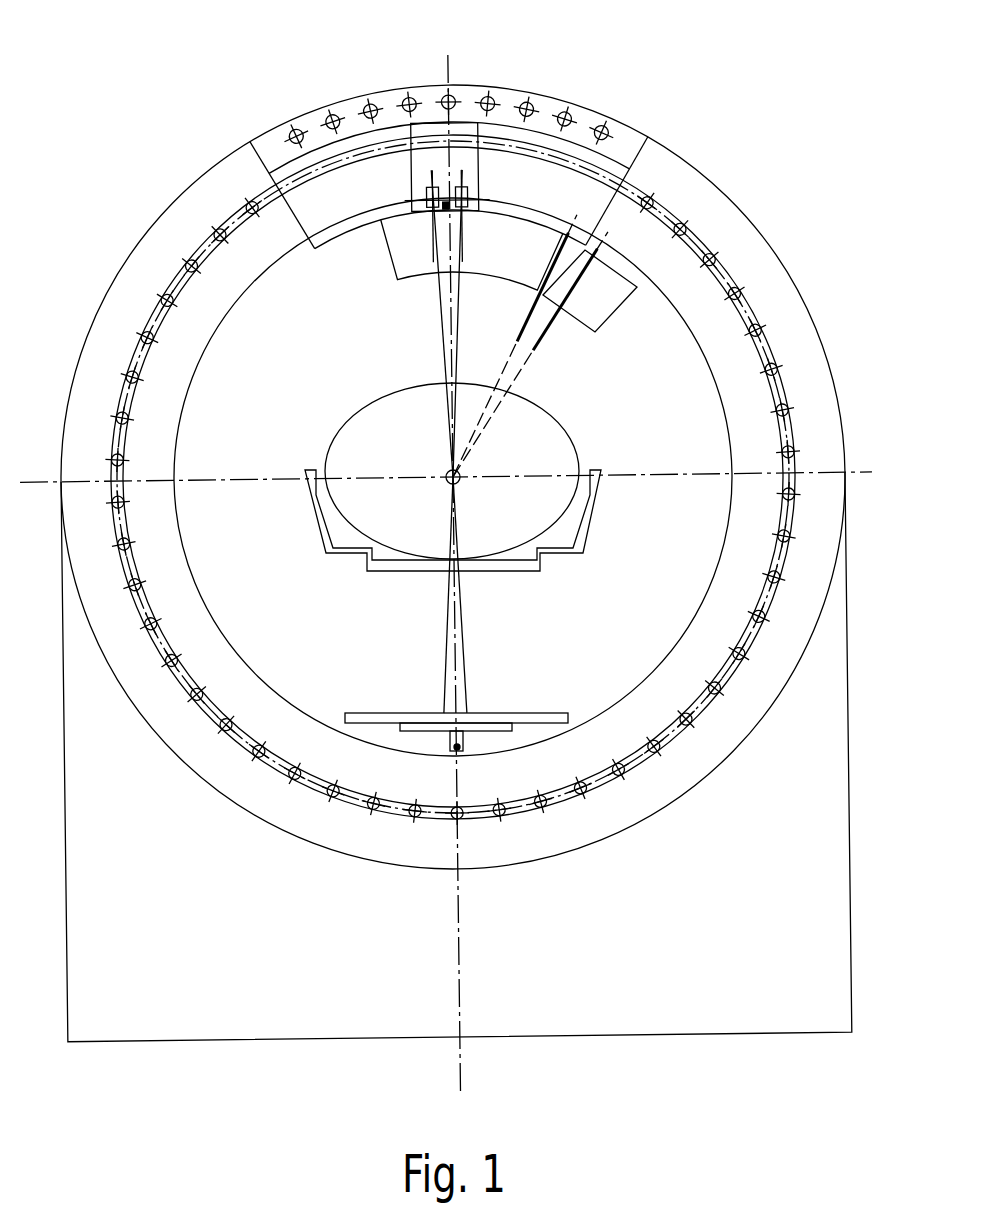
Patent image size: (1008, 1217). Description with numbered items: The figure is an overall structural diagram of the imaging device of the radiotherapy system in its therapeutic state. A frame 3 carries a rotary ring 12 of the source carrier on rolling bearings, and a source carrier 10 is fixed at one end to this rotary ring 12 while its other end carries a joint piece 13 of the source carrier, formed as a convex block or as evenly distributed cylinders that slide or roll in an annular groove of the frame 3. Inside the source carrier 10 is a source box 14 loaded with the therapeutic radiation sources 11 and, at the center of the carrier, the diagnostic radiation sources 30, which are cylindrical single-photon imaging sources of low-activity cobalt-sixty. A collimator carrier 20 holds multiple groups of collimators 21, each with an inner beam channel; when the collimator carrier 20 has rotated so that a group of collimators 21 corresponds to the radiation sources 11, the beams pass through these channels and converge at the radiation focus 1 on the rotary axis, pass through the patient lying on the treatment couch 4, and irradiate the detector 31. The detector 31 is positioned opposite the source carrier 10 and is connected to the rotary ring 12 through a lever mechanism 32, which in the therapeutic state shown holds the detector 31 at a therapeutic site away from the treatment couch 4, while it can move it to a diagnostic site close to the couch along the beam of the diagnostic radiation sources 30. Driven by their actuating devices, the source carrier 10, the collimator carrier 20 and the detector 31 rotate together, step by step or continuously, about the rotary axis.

The radiation focus 1 is at (459, 472).
The frame 3 is at (795, 347).
The treatment couch 4 is at (590, 527).
The source carrier 10 is at (499, 170).
The therapeutic radiation sources 11 is at (432, 190).
The rotary ring of source carrier 12 is at (738, 291).
The joint piece of source carrier 13 is at (587, 110).
The source box 14 is at (435, 172).
The collimator carrier 20 is at (612, 293).
The collimator 21 is at (588, 230).
The diagnostic radiation sources 30 is at (453, 200).
The detector 31 is at (543, 720).
The lever mechanism 32 is at (455, 728).